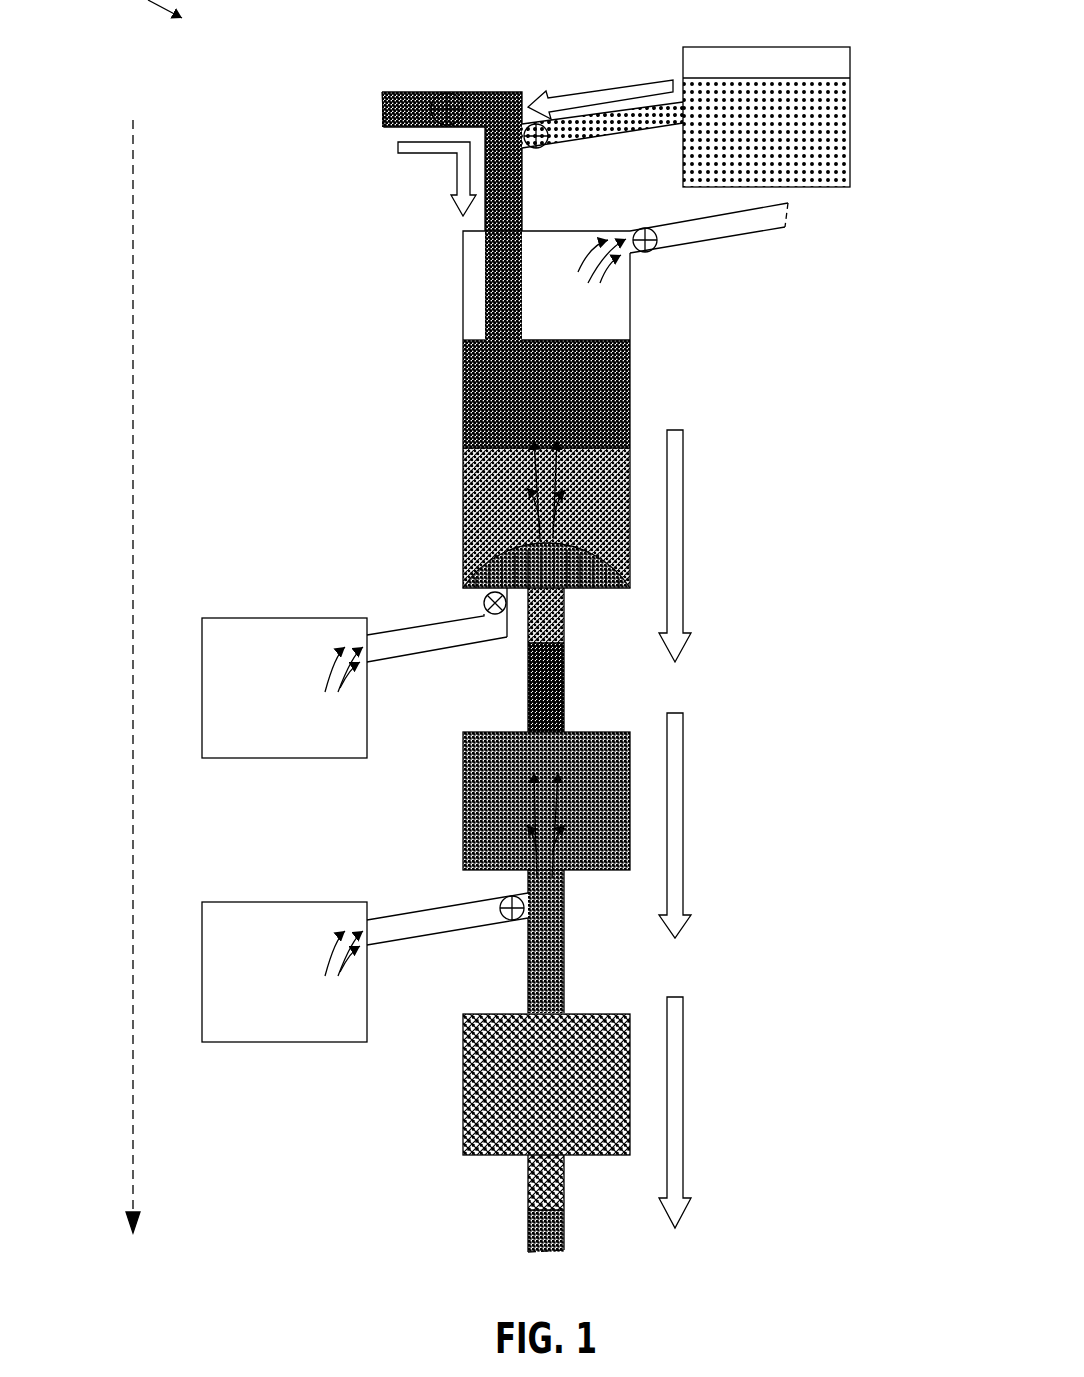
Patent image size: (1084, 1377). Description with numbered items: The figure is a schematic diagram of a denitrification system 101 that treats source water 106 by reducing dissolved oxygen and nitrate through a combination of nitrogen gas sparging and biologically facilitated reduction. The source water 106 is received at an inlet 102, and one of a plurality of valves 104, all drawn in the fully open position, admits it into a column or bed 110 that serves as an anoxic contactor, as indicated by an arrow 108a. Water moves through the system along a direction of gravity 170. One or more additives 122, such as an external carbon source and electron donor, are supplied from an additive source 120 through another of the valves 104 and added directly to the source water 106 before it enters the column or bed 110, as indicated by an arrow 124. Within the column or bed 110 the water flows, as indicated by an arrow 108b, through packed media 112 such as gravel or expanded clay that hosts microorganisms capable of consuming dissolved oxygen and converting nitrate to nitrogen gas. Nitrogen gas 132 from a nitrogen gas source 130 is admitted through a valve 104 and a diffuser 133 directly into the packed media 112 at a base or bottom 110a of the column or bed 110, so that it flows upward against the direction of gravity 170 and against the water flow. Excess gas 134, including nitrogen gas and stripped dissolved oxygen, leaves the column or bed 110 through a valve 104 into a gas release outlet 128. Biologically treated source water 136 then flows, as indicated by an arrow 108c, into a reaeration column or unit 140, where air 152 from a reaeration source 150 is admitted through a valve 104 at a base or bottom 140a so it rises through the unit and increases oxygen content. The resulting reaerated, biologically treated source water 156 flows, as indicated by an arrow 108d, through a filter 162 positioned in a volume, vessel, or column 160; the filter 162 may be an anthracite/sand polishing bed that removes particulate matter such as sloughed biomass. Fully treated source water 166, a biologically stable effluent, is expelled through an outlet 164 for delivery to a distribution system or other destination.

The denitrification system 101 is at (719, 1253).
The inlet 102 is at (363, 92).
The valve 104 is at (452, 92).
The source water 106 is at (412, 95).
The arrow 108a is at (432, 152).
The arrow 108b is at (677, 528).
The arrow 108c is at (677, 812).
The arrow 108d is at (677, 1097).
The column or bed 110 is at (450, 398).
The base or bottom of the column or bed 110a is at (581, 620).
The packed media 112 is at (468, 523).
The additive source 120 is at (860, 122).
The additive 122 is at (845, 168).
The arrow 124 is at (606, 92).
The gas release outlet 128 is at (797, 203).
The nitrogen gas source 130 is at (188, 690).
The nitrogen gas 132 is at (553, 523).
The diffuser 133 is at (598, 590).
The excess gas 134 is at (590, 260).
The biologically treated source water 136 is at (562, 695).
The reaeration column or unit 140 is at (450, 808).
The base or bottom of the reaeration column or unit 140a is at (581, 905).
The reaeration source 150 is at (188, 968).
The air 152 is at (555, 858).
The reaerated, biologically treated source water 156 is at (562, 978).
The volume, vessel, or column 160 is at (450, 1088).
The filter 162 is at (470, 1042).
The outlet 164 is at (528, 1257).
The fully treated source water 166 is at (560, 1228).
The direction of gravity 170 is at (136, 566).